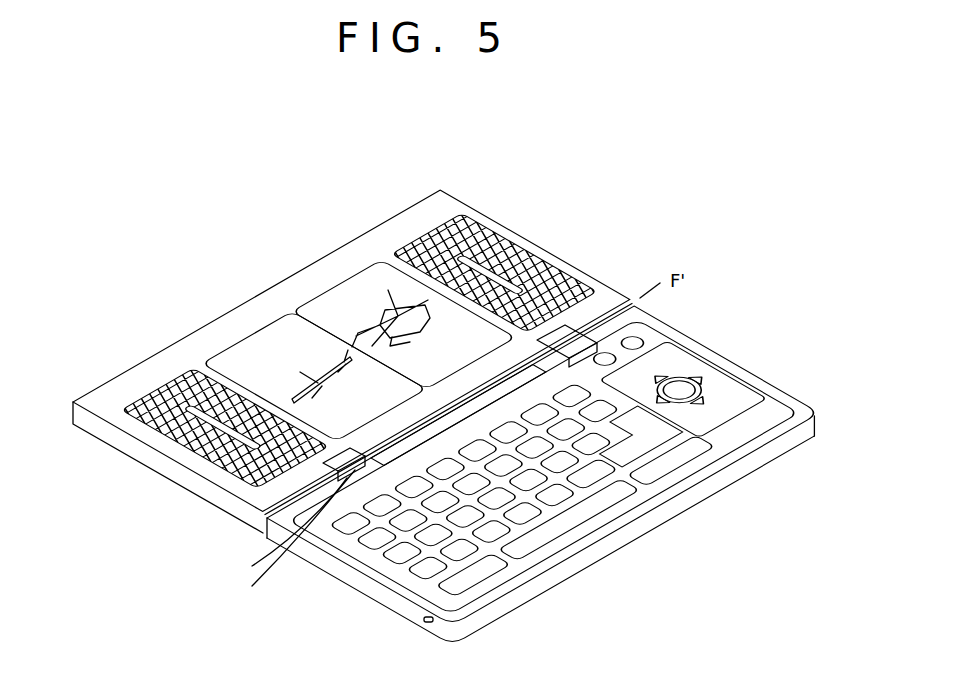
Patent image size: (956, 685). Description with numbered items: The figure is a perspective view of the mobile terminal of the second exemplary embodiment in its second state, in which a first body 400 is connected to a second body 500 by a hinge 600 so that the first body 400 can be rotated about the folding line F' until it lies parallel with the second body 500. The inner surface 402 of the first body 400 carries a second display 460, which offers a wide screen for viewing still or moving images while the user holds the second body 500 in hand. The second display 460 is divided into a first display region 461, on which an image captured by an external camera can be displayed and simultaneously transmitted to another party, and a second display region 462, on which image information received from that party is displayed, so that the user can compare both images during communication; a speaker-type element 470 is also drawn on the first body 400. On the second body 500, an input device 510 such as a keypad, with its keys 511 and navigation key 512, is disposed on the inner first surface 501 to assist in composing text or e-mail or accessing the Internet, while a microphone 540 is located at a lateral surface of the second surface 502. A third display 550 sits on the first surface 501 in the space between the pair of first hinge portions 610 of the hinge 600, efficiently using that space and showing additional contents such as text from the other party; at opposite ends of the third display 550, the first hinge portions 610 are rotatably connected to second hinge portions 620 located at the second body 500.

The first body 400 is at (98, 465).
The inner surface 402 is at (145, 377).
The second display 460 is at (272, 313).
The first display region 461 is at (233, 348).
The second display region 462 is at (330, 292).
The audio output module (speaker) 470 is at (513, 258).
The second body 500 is at (358, 607).
The first surface 501 is at (533, 567).
The second surface 502 is at (488, 613).
The input device 510 is at (822, 483).
The key input unit (keypad) 511 is at (713, 452).
The navigation key unit 512 is at (763, 437).
The microphone 540 is at (426, 625).
The third display 550 is at (633, 312).
The hinge 600 is at (211, 552).
The first hinge portions 610 is at (292, 537).
The second hinge portions 620 is at (284, 553).